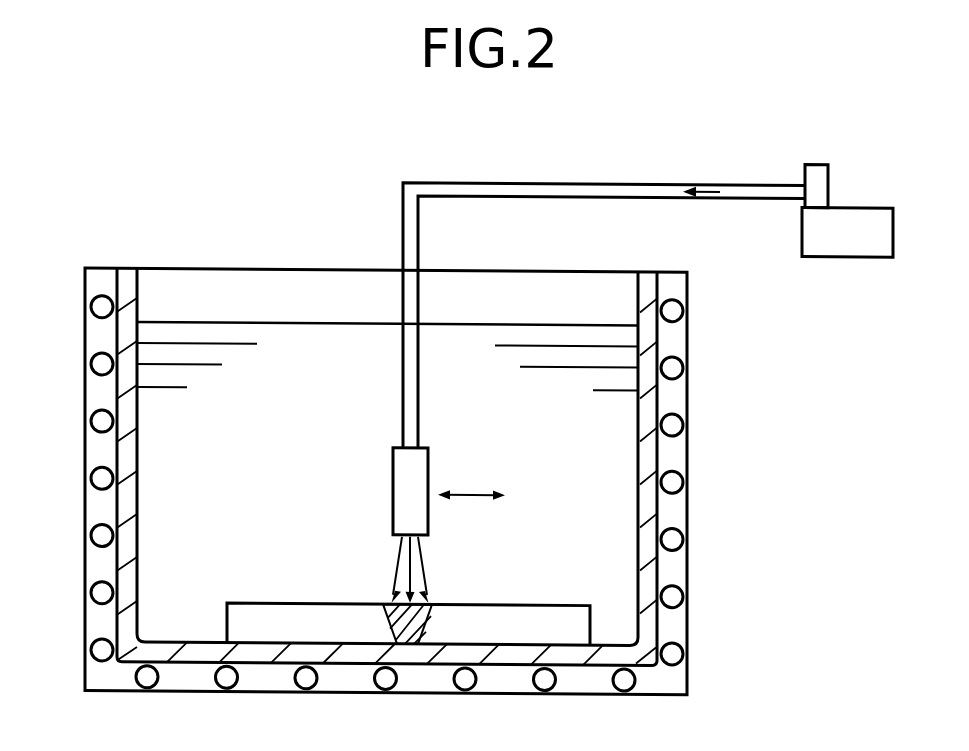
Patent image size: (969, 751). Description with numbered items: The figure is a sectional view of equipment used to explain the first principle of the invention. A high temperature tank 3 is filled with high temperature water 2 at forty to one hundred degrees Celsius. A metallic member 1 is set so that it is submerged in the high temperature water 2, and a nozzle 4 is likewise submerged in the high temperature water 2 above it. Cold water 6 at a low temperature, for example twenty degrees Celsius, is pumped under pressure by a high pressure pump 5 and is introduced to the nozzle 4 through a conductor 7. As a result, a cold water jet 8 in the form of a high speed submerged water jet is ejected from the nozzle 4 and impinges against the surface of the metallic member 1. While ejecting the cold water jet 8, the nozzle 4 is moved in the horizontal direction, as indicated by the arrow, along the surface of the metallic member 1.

The metallic member 1 is at (253, 623).
The high temperature water 2 is at (250, 335).
The high temperature tank 3 is at (115, 509).
The nozzle 4 is at (410, 492).
The high pressure pump 5 is at (842, 234).
The cold water 6 is at (712, 185).
The conductor 7 is at (412, 387).
The cold water jet 8 is at (395, 569).